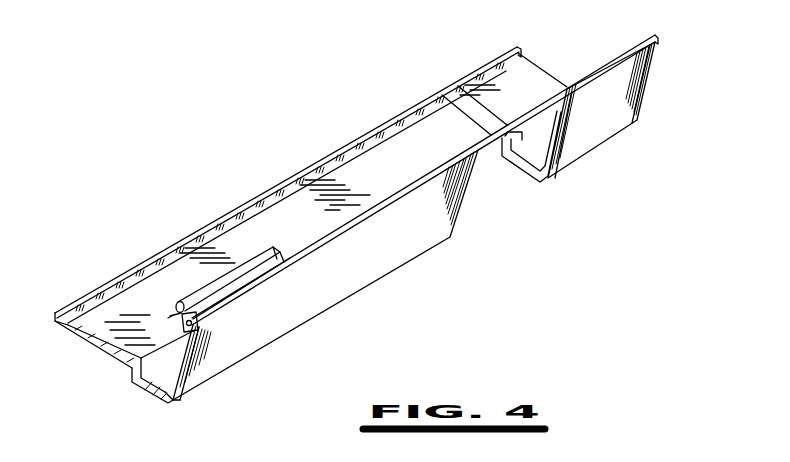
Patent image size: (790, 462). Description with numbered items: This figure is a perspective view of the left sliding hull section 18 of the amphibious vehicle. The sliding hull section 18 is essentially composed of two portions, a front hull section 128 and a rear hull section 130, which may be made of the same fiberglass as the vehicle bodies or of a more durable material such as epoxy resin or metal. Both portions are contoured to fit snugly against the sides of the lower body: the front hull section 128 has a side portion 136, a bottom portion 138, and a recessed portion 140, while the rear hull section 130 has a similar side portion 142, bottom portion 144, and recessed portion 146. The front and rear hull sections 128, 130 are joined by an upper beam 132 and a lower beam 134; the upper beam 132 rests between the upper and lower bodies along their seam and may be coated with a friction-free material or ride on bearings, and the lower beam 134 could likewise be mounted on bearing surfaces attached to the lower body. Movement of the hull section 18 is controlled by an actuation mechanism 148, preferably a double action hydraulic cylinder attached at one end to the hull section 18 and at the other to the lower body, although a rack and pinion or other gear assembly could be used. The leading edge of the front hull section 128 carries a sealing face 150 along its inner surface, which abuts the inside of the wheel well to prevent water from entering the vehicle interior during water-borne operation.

The left sliding hull section 18 is at (488, 247).
The front hull section 128 is at (186, 398).
The rear hull section 130 is at (638, 121).
The upper beam 132 is at (481, 150).
The lower beam 134 is at (366, 136).
The side portion 136 is at (289, 319).
The bottom portion 138 is at (148, 394).
The recessed portion 140 is at (291, 232).
The side portion 142 is at (616, 119).
The bottom portion 144 is at (520, 167).
The recessed portion 146 is at (524, 110).
The actuation mechanism 148 is at (220, 289).
The sealing face 150 is at (73, 319).